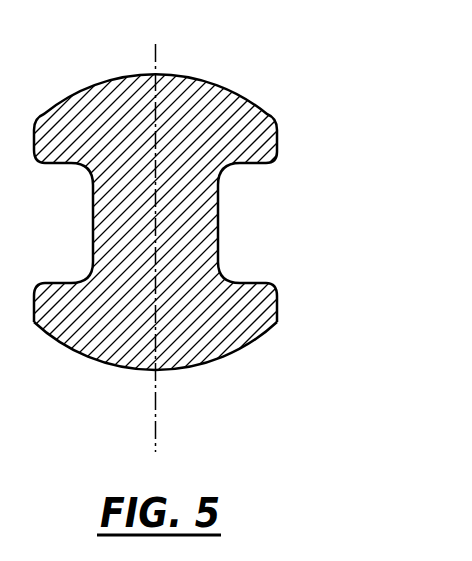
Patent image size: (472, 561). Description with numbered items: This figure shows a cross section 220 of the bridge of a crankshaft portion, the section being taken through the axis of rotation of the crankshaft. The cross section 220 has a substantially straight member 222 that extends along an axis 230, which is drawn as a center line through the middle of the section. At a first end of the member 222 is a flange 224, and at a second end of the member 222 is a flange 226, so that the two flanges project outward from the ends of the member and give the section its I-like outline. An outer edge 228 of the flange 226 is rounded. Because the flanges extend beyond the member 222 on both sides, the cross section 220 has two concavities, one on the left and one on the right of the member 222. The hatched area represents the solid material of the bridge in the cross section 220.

The cross section 220 is at (236, 216).
The substantially straight member 222 is at (200, 220).
The flange 224 is at (238, 137).
The flange 226 is at (243, 317).
The outer edge 228 is at (200, 367).
The axis 230 is at (158, 432).